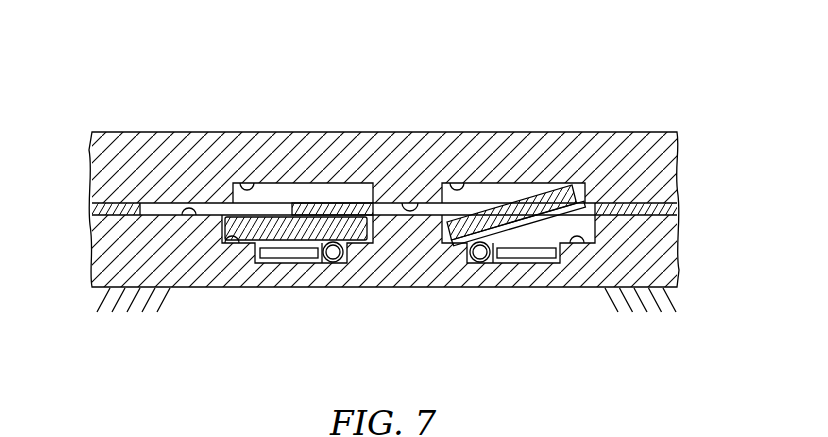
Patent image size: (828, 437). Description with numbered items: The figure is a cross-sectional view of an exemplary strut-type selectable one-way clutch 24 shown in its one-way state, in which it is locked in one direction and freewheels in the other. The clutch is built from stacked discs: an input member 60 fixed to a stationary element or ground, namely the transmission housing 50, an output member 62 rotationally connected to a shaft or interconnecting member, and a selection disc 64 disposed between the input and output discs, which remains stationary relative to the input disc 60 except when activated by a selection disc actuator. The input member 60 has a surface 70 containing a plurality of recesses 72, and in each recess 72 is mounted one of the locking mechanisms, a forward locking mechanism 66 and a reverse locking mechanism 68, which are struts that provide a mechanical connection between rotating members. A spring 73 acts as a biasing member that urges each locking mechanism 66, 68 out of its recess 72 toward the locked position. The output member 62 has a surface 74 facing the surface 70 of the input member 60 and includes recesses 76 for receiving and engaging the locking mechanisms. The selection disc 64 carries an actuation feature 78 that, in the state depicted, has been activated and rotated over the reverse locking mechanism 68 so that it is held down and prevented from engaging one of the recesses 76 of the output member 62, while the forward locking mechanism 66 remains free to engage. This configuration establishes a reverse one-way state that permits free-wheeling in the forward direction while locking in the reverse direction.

The selectable one-way clutch 24 is at (103, 86).
The transmission housing 50 is at (100, 303).
The input member 60 is at (665, 248).
The output member 62 is at (665, 170).
The selection disc 64 is at (141, 209).
The forward locking mechanism 66 is at (519, 186).
The reverse locking mechanism 68 is at (274, 201).
The surface 70 is at (190, 218).
The recess 72 is at (227, 240).
The spring 73 is at (288, 263).
The surface 74 is at (405, 200).
The recess 76 is at (243, 183).
The actuation feature 78 is at (338, 212).